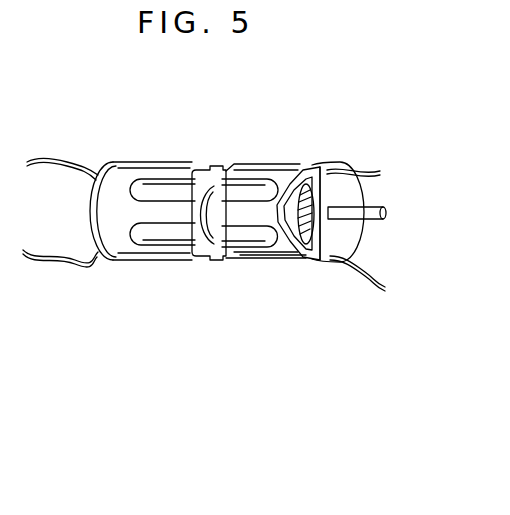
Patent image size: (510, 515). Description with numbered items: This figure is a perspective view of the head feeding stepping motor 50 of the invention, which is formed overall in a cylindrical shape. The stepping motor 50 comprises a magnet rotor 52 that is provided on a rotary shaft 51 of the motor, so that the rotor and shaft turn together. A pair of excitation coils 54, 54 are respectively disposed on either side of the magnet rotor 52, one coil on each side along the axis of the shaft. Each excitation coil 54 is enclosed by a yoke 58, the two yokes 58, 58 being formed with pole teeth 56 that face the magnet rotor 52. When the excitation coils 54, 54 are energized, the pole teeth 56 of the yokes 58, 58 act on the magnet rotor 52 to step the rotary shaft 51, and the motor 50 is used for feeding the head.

The head feeding stepping motor 50 is at (118, 152).
The rotary shaft 51 is at (373, 218).
The magnet rotor 52 is at (212, 222).
The excitation coil 54 is at (310, 172).
The pole teeth 56 is at (166, 216).
The yoke 58 is at (118, 246).